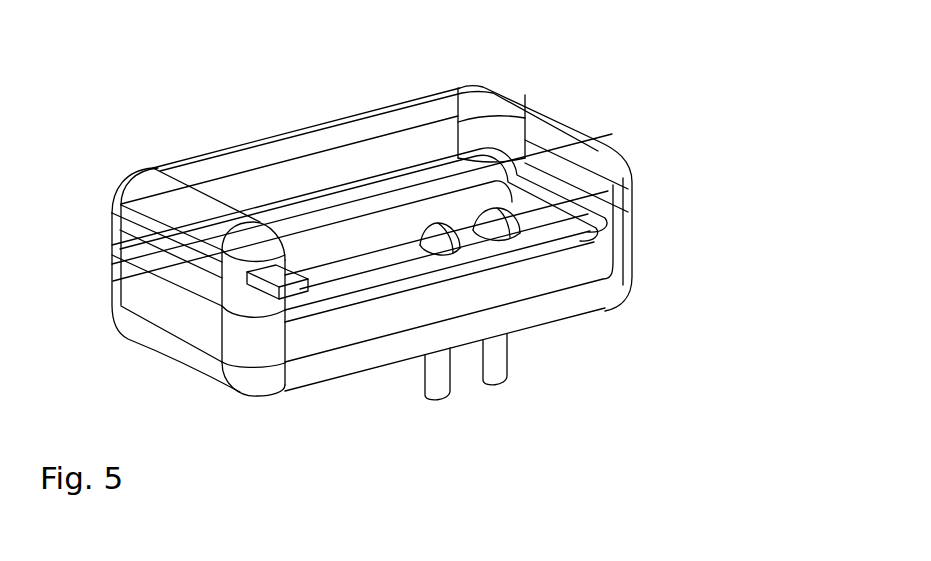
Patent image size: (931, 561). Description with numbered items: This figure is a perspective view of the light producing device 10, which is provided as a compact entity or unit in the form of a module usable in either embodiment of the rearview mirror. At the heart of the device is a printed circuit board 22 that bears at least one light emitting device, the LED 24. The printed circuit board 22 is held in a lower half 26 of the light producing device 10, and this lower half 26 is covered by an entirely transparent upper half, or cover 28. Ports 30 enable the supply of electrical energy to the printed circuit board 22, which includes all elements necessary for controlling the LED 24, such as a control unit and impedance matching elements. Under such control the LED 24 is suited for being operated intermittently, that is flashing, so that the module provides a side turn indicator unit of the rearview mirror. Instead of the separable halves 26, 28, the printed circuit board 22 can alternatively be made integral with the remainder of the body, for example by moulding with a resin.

The light producing device 10 is at (636, 128).
The printed circuit board 22 is at (355, 248).
The light emitting device (LED) 24 is at (247, 272).
The lower half 26 is at (622, 260).
The upper half (cover) 28 is at (277, 148).
The ports 30 is at (432, 395).